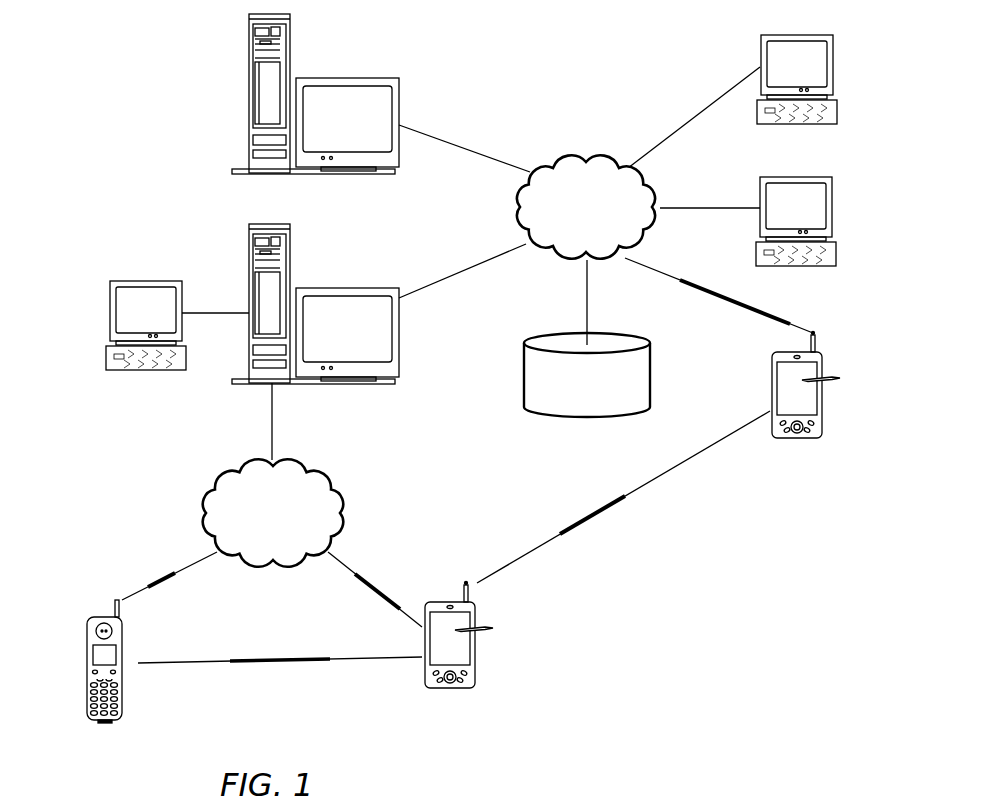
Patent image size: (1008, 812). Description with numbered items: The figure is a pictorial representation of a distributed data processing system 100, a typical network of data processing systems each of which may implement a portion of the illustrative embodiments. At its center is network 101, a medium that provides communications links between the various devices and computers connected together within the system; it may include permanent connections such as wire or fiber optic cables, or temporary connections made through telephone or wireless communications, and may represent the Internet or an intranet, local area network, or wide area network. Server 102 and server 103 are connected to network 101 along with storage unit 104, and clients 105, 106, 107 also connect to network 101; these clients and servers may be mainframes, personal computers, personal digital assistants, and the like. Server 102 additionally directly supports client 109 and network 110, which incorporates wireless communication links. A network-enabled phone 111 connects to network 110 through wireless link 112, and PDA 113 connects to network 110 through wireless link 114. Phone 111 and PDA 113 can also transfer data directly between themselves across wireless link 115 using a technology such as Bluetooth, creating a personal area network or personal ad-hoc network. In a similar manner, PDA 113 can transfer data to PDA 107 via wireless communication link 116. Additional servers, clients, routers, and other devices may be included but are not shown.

The distributed data processing system 100 is at (634, 68).
The network 101 is at (558, 160).
The server 102 is at (248, 306).
The server 103 is at (248, 96).
The storage unit 104 is at (524, 383).
The client 105 is at (833, 62).
The client 106 is at (833, 207).
The PDA 107 is at (823, 407).
The client 109 is at (110, 305).
The network 110 is at (243, 464).
The network-enabled phone 111 is at (86, 686).
The wireless link 112 is at (162, 589).
The PDA 113 is at (477, 648).
The wireless link 114 is at (377, 593).
The wireless link 115 is at (264, 665).
The wireless communication link 116 is at (602, 504).